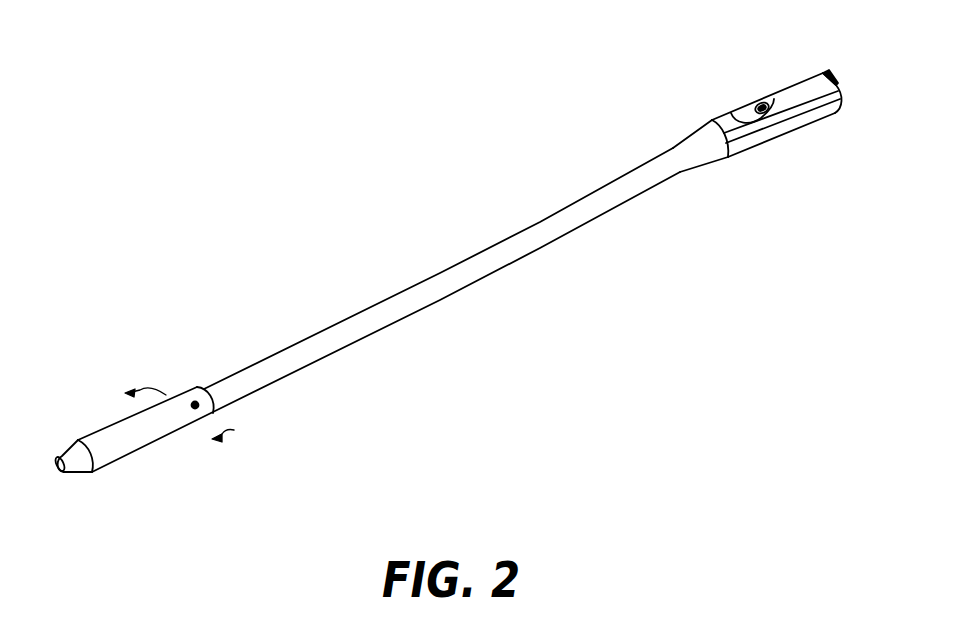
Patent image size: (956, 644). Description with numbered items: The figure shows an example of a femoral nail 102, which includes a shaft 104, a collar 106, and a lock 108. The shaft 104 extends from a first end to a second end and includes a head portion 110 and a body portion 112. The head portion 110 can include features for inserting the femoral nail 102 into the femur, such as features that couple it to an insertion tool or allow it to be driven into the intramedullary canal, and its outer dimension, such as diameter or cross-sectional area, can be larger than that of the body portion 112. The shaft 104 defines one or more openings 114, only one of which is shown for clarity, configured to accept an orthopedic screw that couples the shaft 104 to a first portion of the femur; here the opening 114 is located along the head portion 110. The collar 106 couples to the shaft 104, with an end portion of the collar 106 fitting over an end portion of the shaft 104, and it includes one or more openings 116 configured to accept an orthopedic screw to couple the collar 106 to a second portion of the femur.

The femoral nail 102 is at (142, 145).
The shaft 104 is at (492, 232).
The collar 106 is at (70, 393).
The lock 108 is at (195, 414).
The head portion 110 is at (849, 116).
The body portion 112 is at (698, 205).
The opening 114 is at (761, 102).
The opening 116 is at (104, 457).